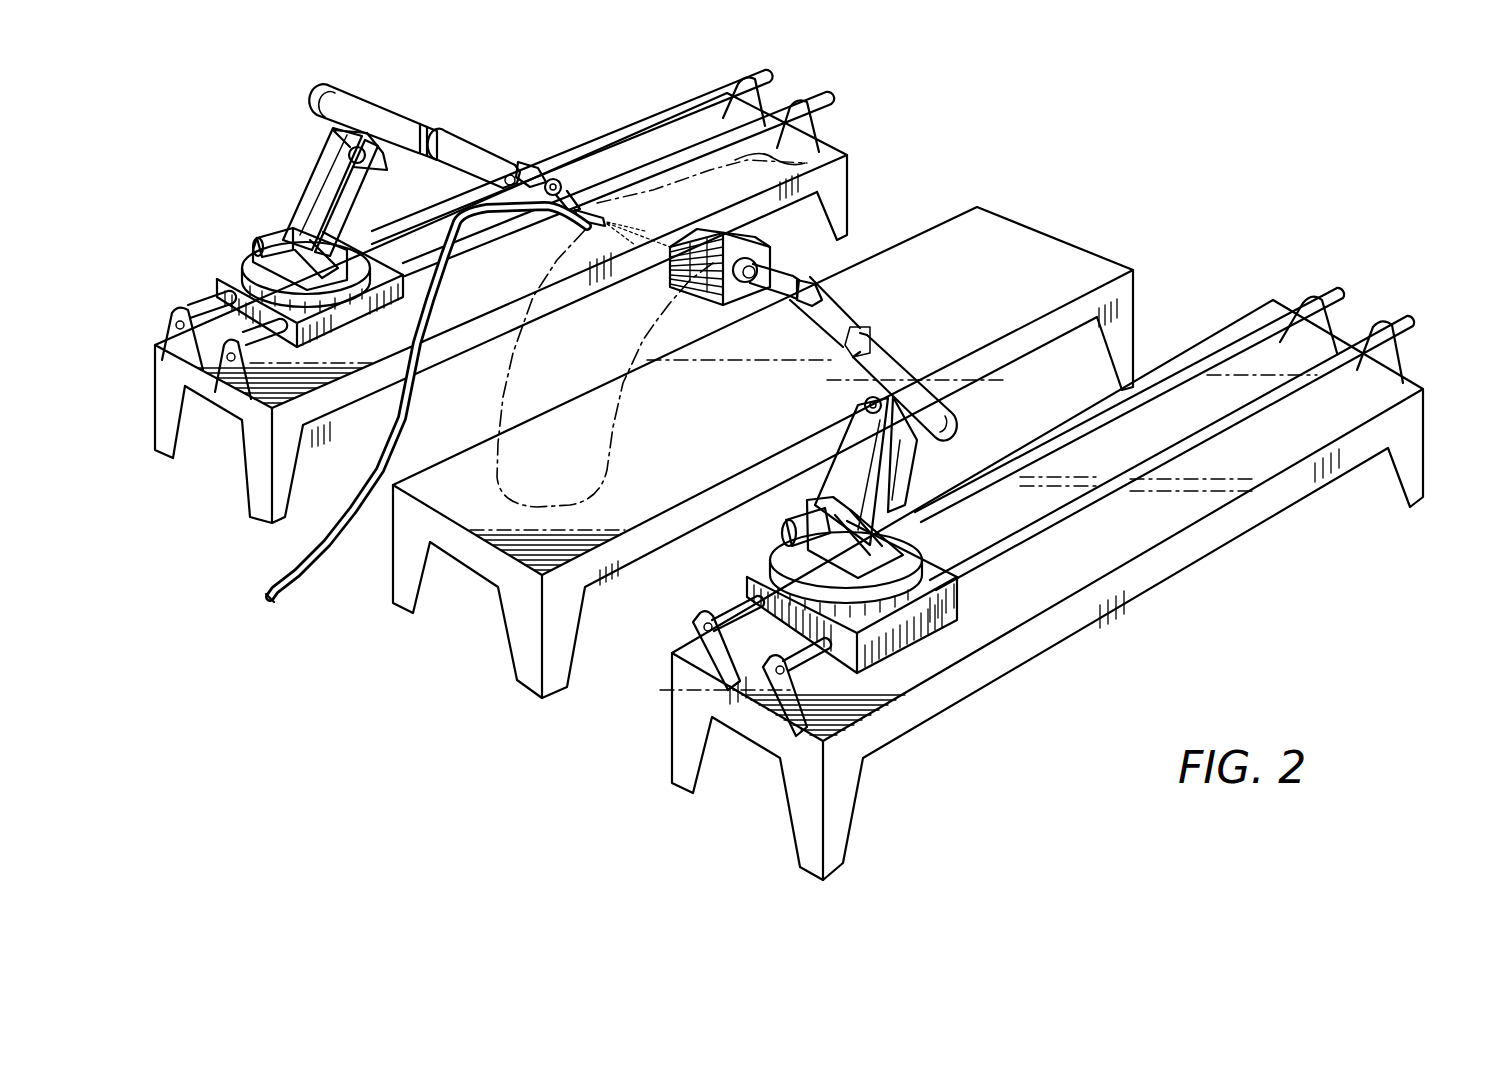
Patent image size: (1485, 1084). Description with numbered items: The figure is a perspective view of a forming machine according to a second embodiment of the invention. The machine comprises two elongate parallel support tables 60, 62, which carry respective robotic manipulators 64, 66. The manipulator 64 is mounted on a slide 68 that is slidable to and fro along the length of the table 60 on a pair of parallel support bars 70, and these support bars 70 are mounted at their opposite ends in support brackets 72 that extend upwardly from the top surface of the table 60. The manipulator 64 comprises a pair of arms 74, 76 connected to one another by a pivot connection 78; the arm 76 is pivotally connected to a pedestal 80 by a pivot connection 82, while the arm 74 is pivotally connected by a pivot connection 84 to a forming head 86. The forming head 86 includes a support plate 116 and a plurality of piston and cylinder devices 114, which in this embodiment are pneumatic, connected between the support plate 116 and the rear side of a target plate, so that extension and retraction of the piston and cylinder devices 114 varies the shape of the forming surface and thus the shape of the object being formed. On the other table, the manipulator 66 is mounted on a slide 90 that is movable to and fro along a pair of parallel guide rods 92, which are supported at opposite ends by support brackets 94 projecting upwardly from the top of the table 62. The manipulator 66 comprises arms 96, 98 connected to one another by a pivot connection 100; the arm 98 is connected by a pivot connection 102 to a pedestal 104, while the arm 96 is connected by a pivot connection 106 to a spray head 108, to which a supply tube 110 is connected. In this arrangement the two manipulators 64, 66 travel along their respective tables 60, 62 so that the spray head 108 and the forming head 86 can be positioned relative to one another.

The support table 60 is at (1092, 566).
The support table 62 is at (514, 281).
The robotic manipulator 64 is at (942, 464).
The robotic manipulator 66 is at (397, 82).
The slide 68 is at (920, 617).
The support bars 70 is at (1127, 480).
The support brackets 72 is at (1333, 320).
The arm 74 is at (897, 357).
The arm 76 is at (847, 453).
The pivot connection 78 is at (866, 405).
The pedestal 80 is at (915, 578).
The pivot connection 82 is at (783, 537).
The pivot connection 84 is at (795, 308).
The forming head 86 is at (670, 306).
The slide 90 is at (330, 323).
The guide rods 92 is at (637, 168).
The support brackets 94 is at (752, 104).
The arm 96 is at (470, 138).
The arm 98 is at (352, 208).
The pivot connection 100 is at (380, 174).
The pivot connection 102 is at (262, 240).
The pedestal 104 is at (257, 277).
The pivot connection 106 is at (505, 158).
The spray head 108 is at (623, 212).
The supply tube 110 is at (280, 574).
The piston and cylinder devices 114 is at (753, 235).
The support plate 116 is at (727, 294).